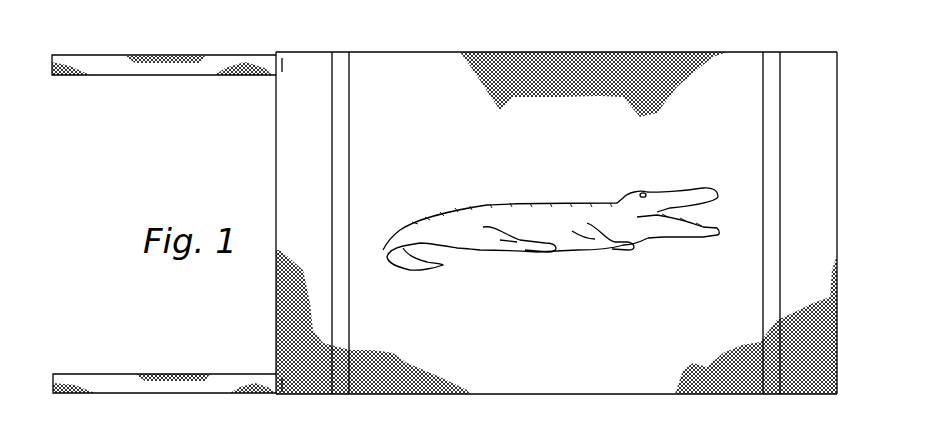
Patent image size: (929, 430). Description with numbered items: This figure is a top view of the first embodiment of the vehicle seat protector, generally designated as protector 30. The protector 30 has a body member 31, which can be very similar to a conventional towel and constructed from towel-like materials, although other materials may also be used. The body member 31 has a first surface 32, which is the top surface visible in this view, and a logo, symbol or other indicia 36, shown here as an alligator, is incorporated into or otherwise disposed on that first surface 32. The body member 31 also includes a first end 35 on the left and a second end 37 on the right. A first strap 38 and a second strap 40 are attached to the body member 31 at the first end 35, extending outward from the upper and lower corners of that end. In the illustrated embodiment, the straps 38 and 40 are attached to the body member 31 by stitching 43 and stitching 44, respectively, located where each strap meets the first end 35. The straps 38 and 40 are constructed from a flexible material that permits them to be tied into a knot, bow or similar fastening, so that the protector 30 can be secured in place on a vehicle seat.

The protector 30 is at (150, 167).
The body member 31 is at (425, 52).
The first surface 32 is at (568, 383).
The first end 35 is at (276, 127).
The indicia 36 is at (492, 203).
The second end 37 is at (838, 190).
The first strap 38 is at (158, 75).
The second strap 40 is at (118, 374).
The stitching 43 is at (284, 60).
The stitching 44 is at (288, 394).